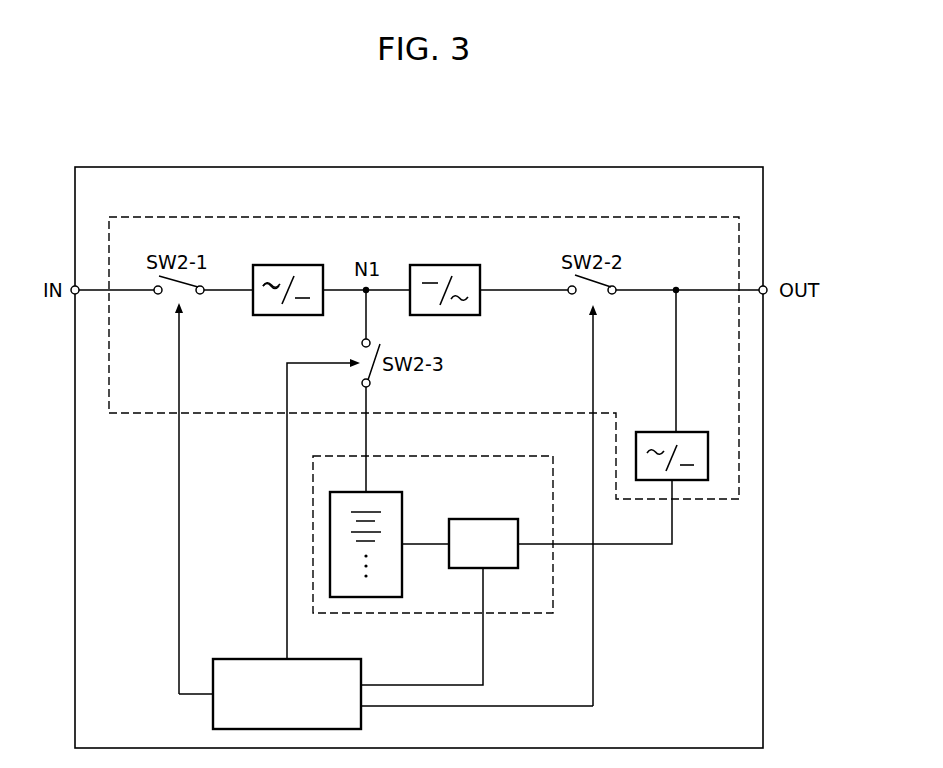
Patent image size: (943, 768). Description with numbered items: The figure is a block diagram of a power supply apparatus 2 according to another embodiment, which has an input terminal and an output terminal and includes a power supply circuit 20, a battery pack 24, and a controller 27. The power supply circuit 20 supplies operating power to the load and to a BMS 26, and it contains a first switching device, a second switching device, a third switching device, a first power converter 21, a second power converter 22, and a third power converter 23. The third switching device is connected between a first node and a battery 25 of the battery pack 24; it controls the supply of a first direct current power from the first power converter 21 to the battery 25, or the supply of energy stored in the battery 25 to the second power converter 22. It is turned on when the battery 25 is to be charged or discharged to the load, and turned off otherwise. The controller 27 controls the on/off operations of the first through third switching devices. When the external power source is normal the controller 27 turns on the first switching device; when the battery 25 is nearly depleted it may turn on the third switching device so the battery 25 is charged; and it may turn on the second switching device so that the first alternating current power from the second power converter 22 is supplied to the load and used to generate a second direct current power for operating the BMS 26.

The power supply apparatus 2 is at (647, 142).
The power supply circuit 20 is at (523, 217).
The first power converter 21 is at (290, 265).
The second power converter 22 is at (450, 265).
The third power converter 23 is at (686, 432).
The battery pack 24 is at (485, 456).
The battery 25 is at (382, 492).
The BMS 26 is at (485, 519).
The controller 27 is at (313, 659).